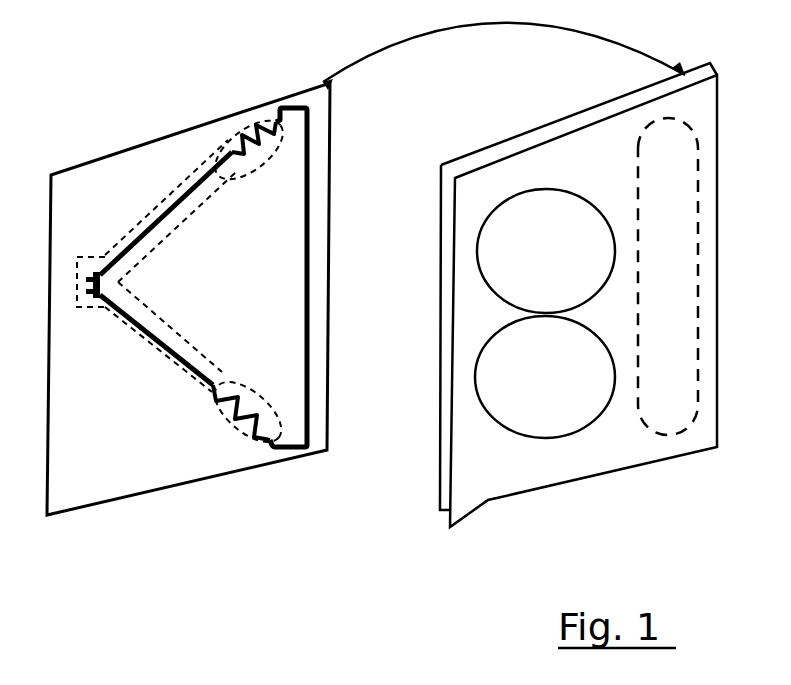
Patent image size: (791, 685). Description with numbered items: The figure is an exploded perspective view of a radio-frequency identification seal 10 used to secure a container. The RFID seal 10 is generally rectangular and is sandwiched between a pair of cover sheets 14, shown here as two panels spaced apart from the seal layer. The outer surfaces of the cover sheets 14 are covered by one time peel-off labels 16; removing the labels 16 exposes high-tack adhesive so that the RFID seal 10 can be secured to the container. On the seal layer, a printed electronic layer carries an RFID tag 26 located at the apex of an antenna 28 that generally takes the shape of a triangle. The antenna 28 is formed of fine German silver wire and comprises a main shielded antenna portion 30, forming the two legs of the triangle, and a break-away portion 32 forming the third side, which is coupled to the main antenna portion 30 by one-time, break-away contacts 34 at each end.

The radio-frequency identification seal 10 is at (183, 537).
The cover sheets 14 is at (455, 168).
The one time peel-off labels 16 is at (458, 508).
The RFID tag 26 is at (102, 309).
The antenna 28 is at (163, 175).
The main shielded antenna portion 30 is at (165, 333).
The break-away portion 32 is at (303, 277).
The one-time break-away contacts 34 is at (241, 136).